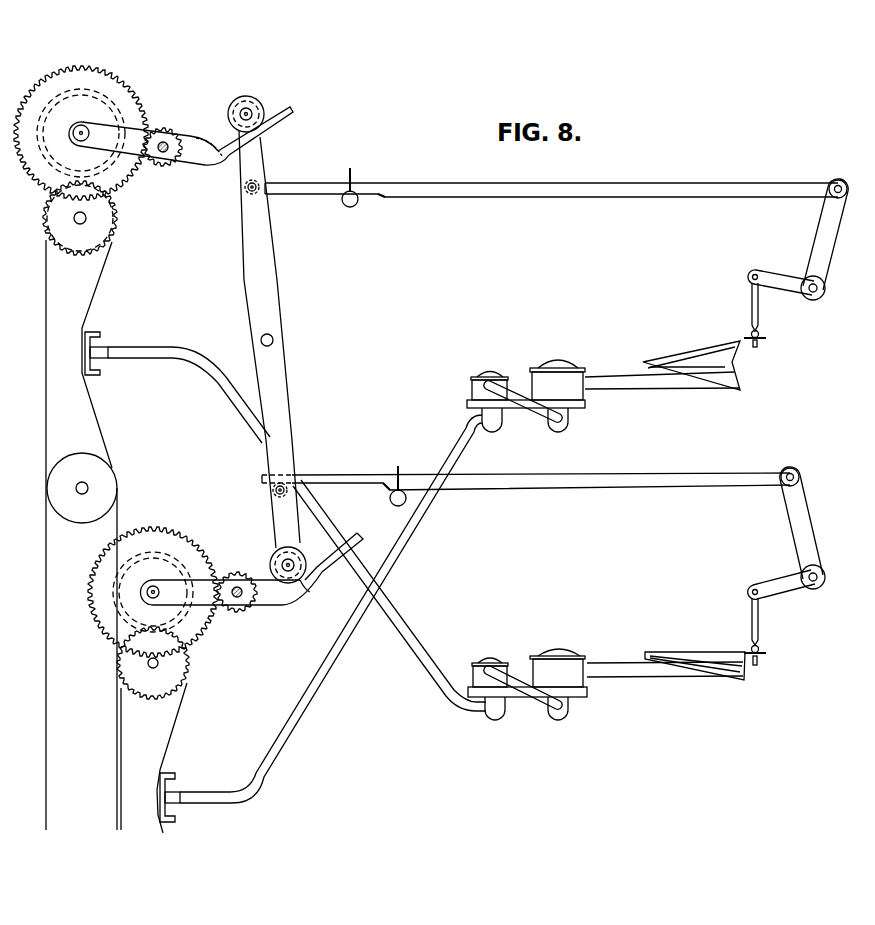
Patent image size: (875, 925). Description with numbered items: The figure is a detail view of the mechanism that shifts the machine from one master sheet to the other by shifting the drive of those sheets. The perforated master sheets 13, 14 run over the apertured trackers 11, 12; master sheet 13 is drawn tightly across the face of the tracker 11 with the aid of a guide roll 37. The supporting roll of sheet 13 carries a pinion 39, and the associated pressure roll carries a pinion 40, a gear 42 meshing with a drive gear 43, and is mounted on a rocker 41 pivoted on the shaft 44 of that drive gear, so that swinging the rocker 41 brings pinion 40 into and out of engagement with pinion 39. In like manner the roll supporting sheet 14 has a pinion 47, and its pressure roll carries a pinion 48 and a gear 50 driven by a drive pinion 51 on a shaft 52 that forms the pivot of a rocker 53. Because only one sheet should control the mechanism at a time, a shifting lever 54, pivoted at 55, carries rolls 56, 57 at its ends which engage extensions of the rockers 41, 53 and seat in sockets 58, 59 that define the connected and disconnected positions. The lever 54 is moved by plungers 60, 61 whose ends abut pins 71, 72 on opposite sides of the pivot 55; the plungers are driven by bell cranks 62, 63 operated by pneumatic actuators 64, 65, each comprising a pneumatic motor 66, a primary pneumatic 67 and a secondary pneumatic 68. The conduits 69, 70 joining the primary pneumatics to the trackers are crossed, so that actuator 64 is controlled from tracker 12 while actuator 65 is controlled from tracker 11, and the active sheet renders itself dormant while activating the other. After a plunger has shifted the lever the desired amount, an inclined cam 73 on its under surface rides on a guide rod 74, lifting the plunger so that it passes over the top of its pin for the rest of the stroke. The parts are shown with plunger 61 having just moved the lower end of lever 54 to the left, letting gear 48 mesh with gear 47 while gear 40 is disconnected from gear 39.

The tracker 11 is at (110, 322).
The tracker 12 is at (172, 776).
The master sheet 13 is at (100, 423).
The master sheet 14 is at (187, 720).
The guide roll 37 is at (82, 488).
The pinion 39 is at (80, 218).
The pinion 40 is at (93, 162).
The rocker 41 is at (213, 163).
The gear 42 is at (81, 133).
The drive gear 43 is at (163, 129).
The shaft 44 is at (164, 154).
The pinion 47 is at (153, 663).
The pinion 48 is at (170, 560).
The gear 50 is at (165, 527).
The drive pinion 51 is at (243, 575).
The shaft 52 is at (237, 600).
The rocker 53 is at (263, 598).
The shifting lever 54 is at (244, 266).
The pivot 55 is at (267, 347).
The roll 56 is at (258, 108).
The roll 57 is at (275, 558).
The socket 58 is at (210, 146).
The socket 59 is at (248, 136).
The plunger 60 is at (477, 195).
The plunger 61 is at (580, 484).
The bell crank 62 is at (817, 238).
The bell crank 63 is at (795, 522).
The pneumatic actuator 64 is at (653, 382).
The pneumatic actuator 65 is at (622, 672).
The pneumatic motor 66 is at (723, 370).
The primary pneumatic 67 is at (478, 390).
The secondary pneumatic 68 is at (557, 523).
The conduit 69 is at (398, 552).
The conduit 70 is at (402, 623).
The pin 71 is at (253, 195).
The pin 72 is at (280, 496).
The inclined cam 73 is at (387, 199).
The guide rod 74 is at (347, 204).